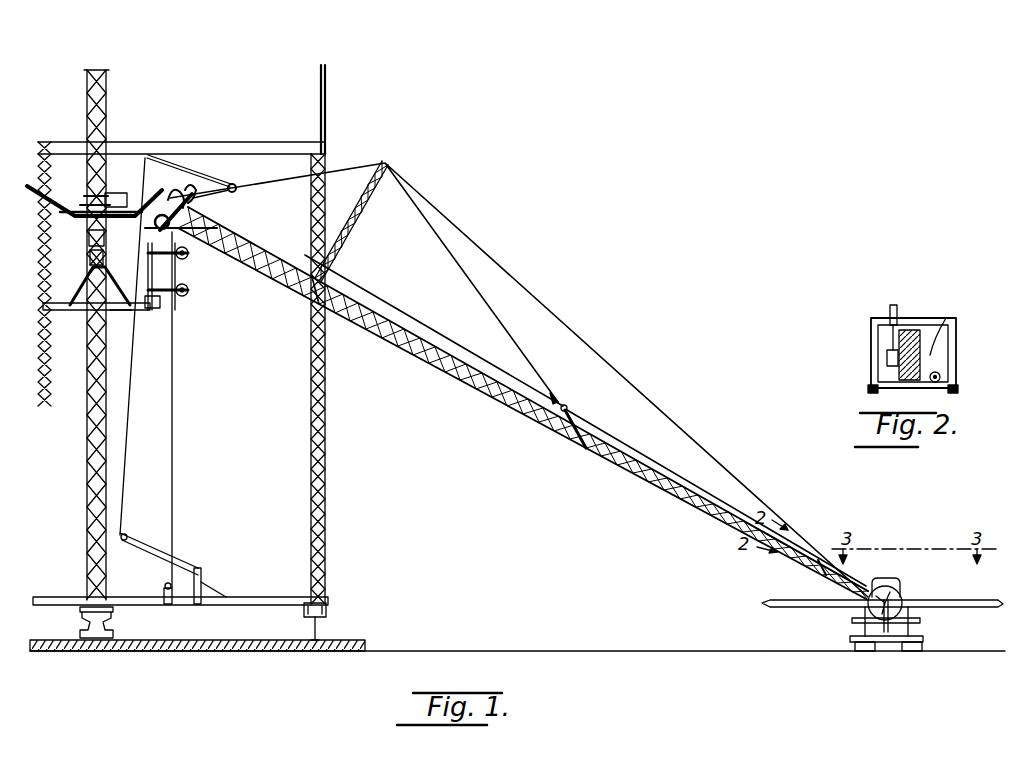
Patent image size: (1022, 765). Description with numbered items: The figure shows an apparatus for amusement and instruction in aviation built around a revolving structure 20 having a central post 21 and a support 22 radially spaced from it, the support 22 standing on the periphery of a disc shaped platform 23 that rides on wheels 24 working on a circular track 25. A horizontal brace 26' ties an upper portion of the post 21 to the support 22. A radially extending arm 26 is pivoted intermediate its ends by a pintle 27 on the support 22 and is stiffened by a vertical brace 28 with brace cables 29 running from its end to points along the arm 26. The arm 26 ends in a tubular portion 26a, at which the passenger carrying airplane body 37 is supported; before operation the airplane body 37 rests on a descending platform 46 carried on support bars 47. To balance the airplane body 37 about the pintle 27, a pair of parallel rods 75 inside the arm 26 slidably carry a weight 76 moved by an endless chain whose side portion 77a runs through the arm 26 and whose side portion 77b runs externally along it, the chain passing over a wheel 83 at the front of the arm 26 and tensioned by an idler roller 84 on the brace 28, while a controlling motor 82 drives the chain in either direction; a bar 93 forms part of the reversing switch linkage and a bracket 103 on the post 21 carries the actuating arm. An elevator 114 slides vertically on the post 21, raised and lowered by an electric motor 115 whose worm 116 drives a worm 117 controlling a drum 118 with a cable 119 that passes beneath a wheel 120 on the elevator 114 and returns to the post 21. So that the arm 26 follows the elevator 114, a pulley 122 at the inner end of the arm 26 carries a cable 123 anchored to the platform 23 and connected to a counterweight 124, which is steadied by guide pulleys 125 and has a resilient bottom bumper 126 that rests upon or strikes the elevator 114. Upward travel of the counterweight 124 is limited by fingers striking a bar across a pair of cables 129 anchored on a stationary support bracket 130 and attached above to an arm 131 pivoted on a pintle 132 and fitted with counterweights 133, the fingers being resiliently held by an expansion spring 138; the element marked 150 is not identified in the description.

In FIG. 1, the revolving structure 20 is at (331, 606).
In FIG. 1, the central post 21 is at (86, 404).
In FIG. 1, the support 22 is at (325, 430).
In FIG. 1, the disc shaped platform 23 is at (254, 597).
In FIG. 1, the wheels 24 is at (323, 618).
In FIG. 1, the circular track 25 is at (312, 639).
In FIG. 1, the radially extending arm 26 is at (523, 403).
In FIG. 2, the radially extending arm 26 is at (891, 352).
In FIG. 1, the horizontal brace 26' is at (181, 259).
In FIG. 1, the tubular portion 26a is at (887, 580).
In FIG. 1, the pintle 27 is at (308, 288).
In FIG. 1, the vertical brace 28 is at (362, 214).
In FIG. 1, the brace cables 29 is at (382, 163).
In FIG. 1, the airplane body 37 is at (960, 607).
In FIG. 1, the descending platform 46 is at (853, 633).
In FIG. 1, the support bars 47 is at (850, 650).
In FIG. 2, the parallel rods 75 is at (931, 325).
In FIG. 1, the weight 76 is at (745, 530).
In FIG. 2, the weight 76 is at (908, 333).
In FIG. 1, the side portion of chain 77a is at (599, 450).
In FIG. 1, the side portion of chain 77b is at (622, 442).
In FIG. 2, the side portion of chain 77b is at (887, 356).
In FIG. 1, the controlling motor 82 is at (196, 204).
In FIG. 1, the wheel 83 is at (818, 560).
In FIG. 2, the wheel 83 is at (889, 312).
In FIG. 1, the idler roller 84 is at (336, 270).
In FIG. 1, the bar 93 is at (189, 183).
In FIG. 1, the bracket 103 is at (170, 198).
In FIG. 1, the elevator 114 is at (48, 304).
In FIG. 1, the electric motor 115 is at (123, 193).
In FIG. 1, the worm 116 is at (88, 197).
In FIG. 1, the worm 117 is at (84, 205).
In FIG. 1, the drum 118 is at (62, 216).
In FIG. 1, the cable 119 is at (89, 238).
In FIG. 1, the wheel 120 is at (90, 258).
In FIG. 1, the pulley 122 is at (180, 222).
In FIG. 1, the cable 123 is at (174, 347).
In FIG. 1, the counterweight 124 is at (153, 283).
In FIG. 1, the guide pulleys 125 is at (190, 295).
In FIG. 1, the bottom bumper 126 is at (162, 309).
In FIG. 1, the cables 129 is at (129, 425).
In FIG. 1, the stationary support bracket 130 is at (145, 542).
In FIG. 1, the arm 131 is at (178, 166).
In FIG. 1, the pintle 132 is at (202, 177).
In FIG. 1, the counterweights 133 is at (237, 186).
In FIG. 1, the expansion spring 138 is at (188, 256).
In FIG. 1, the plate 150 is at (121, 310).